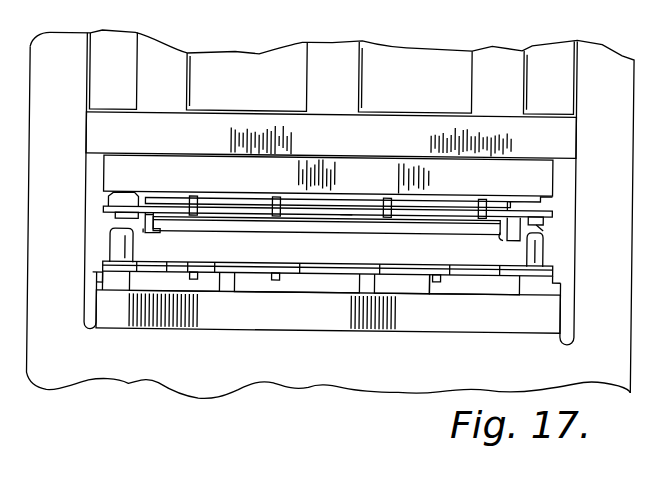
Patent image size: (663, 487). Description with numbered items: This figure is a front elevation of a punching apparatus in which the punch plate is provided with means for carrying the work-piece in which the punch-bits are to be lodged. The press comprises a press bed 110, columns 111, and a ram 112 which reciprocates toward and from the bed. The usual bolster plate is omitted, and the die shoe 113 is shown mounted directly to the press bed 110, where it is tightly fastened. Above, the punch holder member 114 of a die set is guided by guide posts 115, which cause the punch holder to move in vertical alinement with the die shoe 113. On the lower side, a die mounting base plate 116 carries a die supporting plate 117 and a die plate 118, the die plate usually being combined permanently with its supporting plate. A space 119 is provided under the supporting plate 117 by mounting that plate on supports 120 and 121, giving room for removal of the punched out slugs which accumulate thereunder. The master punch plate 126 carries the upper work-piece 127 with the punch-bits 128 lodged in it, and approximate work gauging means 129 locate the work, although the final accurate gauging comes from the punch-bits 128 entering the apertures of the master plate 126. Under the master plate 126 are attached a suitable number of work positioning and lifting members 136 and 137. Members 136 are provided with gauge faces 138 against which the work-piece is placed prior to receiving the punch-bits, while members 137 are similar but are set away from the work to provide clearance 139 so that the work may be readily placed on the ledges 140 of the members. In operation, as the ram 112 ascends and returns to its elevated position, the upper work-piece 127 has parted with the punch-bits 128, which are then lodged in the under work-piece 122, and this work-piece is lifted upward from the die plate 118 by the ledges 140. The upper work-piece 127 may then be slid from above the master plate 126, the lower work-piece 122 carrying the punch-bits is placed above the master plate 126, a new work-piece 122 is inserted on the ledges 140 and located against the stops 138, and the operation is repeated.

The press bed 110 is at (330, 224).
The columns 111 is at (330, 211).
The ram 112 is at (418, 124).
The die shoe 113 is at (328, 311).
The punch holder member 114 is at (328, 175).
The guide posts 115 is at (108, 246).
The die mounting base plate 116 is at (257, 293).
The die supporting plate 117 is at (410, 284).
The die plate 118 is at (437, 266).
The space 119 is at (285, 288).
The support 120 is at (95, 280).
The support 121 is at (437, 285).
The under work-piece 122 is at (305, 226).
The master punch plate 126 is at (347, 212).
The upper work-piece 127 is at (226, 201).
The punch-bits 128 is at (397, 200).
The work gauging means 129 is at (147, 197).
The work positioning and lifting member 136 is at (143, 230).
The work positioning and lifting member 137 is at (537, 225).
The gauge face 138 is at (147, 213).
The clearance 139 is at (505, 228).
The ledge 140 is at (160, 231).